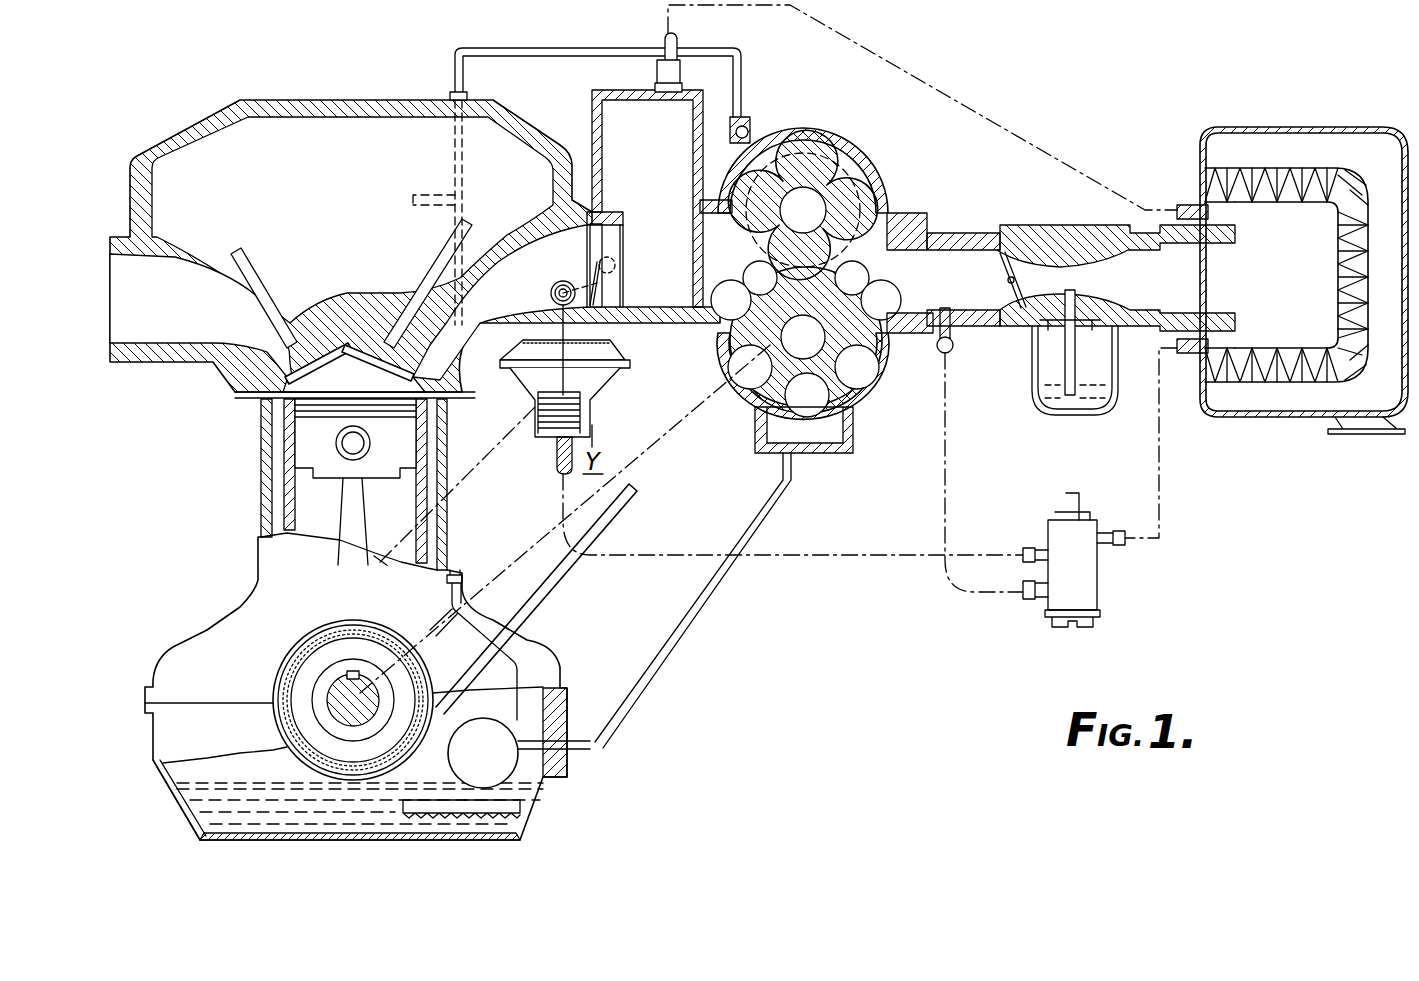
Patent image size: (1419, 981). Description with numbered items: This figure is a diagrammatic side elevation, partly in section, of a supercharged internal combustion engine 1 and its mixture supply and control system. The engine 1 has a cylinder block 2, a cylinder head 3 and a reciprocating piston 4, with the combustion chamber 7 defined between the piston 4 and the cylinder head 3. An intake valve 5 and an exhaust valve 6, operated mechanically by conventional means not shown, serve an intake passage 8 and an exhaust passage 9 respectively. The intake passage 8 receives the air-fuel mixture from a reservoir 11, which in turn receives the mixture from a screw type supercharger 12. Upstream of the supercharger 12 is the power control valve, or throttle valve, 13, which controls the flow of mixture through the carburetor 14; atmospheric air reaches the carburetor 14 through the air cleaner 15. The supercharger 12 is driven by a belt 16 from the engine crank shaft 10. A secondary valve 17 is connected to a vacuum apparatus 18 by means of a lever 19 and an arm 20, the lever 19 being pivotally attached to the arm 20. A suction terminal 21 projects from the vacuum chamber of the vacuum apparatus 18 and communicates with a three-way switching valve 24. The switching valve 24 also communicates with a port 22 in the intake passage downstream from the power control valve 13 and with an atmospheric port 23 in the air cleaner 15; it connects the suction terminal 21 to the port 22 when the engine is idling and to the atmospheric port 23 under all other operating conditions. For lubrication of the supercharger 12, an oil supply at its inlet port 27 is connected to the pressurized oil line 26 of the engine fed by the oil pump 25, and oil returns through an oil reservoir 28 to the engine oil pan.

The internal combustion engine 1 is at (256, 478).
The cylinder block 2 is at (286, 508).
The cylinder head 3 is at (178, 168).
The reciprocating piston 4 is at (300, 441).
The intake valve 5 is at (443, 256).
The exhaust valve 6 is at (258, 272).
The combustion chamber 7 is at (354, 369).
The intake passage 8 is at (520, 284).
The exhaust passage 9 is at (201, 319).
The engine crank shaft 10 is at (345, 702).
The reservoir 11 is at (603, 92).
The screw type supercharger 12 is at (812, 128).
The power control valve 13 is at (1020, 240).
The carburetor 14 is at (1068, 240).
The air cleaner 15 is at (1327, 125).
The belt 16 is at (557, 573).
The secondary valve 17 is at (624, 237).
The vacuum apparatus 18 is at (622, 411).
The lever 19 is at (563, 281).
The arm 20 is at (605, 372).
The suction terminal 21 is at (560, 470).
The port 22 is at (950, 352).
The atmospheric port 23 is at (1187, 355).
The three-way switching valve 24 is at (1100, 592).
The oil pump 25 is at (502, 757).
The pressurized oil line 26 is at (510, 48).
The inlet port 27 is at (760, 127).
The oil reservoir 28 is at (835, 440).